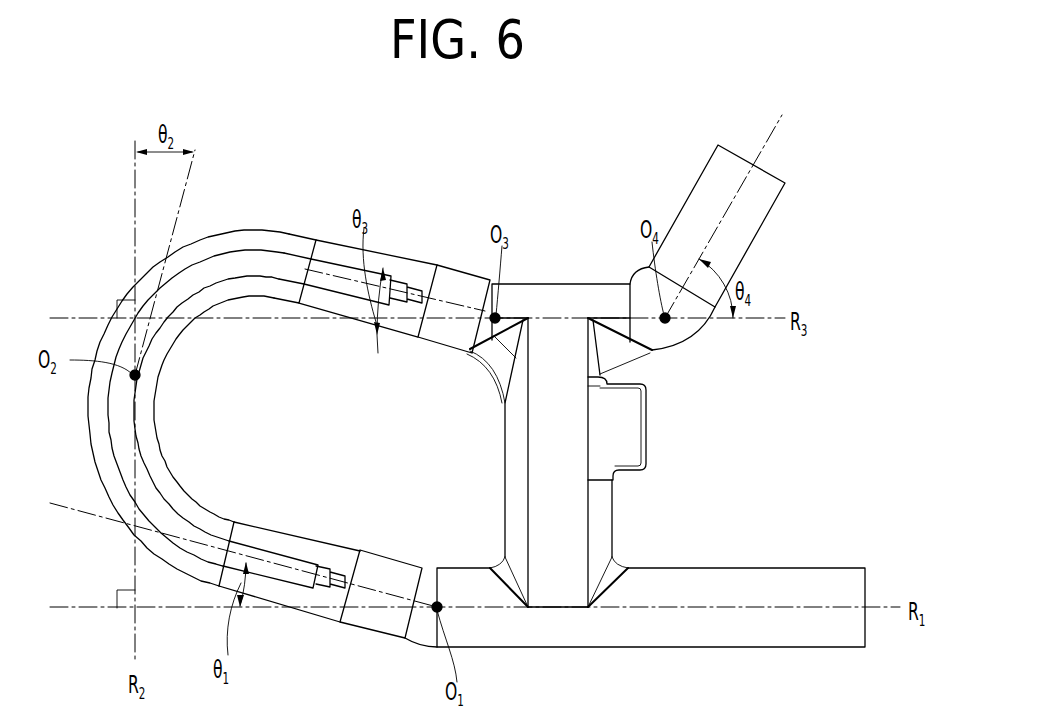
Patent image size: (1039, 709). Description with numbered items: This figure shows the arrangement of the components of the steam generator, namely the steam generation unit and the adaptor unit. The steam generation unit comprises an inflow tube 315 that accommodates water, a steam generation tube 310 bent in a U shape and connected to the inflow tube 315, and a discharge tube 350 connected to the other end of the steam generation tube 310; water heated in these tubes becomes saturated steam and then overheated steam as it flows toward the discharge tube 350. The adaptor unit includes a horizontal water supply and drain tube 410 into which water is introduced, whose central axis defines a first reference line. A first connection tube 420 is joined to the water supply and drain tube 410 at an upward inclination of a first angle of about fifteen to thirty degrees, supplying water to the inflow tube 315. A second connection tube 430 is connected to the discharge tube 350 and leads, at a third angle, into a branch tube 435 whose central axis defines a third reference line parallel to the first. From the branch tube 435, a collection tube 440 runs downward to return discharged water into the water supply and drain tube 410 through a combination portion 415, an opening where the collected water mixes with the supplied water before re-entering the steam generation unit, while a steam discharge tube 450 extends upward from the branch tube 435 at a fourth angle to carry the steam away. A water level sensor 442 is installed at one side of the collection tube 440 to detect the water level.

The steam generation tube 310 is at (100, 450).
The inflow tube 315 is at (274, 598).
The discharge tube 350 is at (333, 244).
The water supply and drain tube 410 is at (689, 625).
The combination portion 415 is at (615, 562).
The first connection tube 420 is at (369, 622).
The second connection tube 430 is at (455, 277).
The branch tube 435 is at (544, 288).
The collection tube 440 is at (575, 494).
The water level sensor 442 is at (636, 425).
The steam discharge tube 450 is at (710, 191).